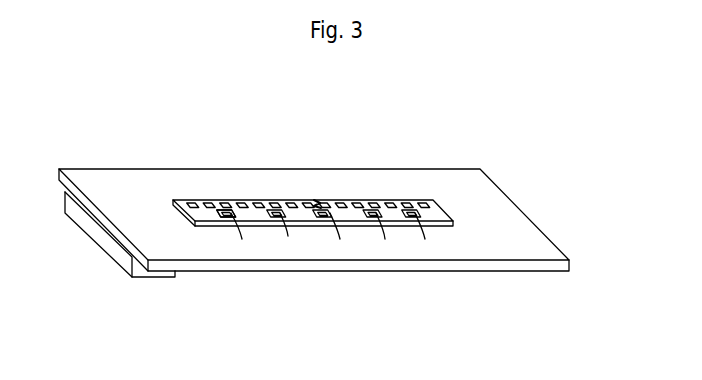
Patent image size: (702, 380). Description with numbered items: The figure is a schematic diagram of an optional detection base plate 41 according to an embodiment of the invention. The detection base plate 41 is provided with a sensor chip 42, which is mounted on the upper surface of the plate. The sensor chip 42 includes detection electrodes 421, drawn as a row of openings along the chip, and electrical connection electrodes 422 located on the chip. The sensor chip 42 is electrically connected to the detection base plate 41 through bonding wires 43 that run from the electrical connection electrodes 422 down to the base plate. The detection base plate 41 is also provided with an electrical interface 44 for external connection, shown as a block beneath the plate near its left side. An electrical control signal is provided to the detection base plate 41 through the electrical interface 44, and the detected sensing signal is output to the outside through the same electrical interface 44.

The detection base plate 41 is at (478, 250).
The sensor chip 42 is at (340, 213).
The bonding wires 43 is at (287, 229).
The electrical interface 44 is at (90, 223).
The detection electrodes 421 is at (341, 206).
The electrical connection electrodes 422 is at (220, 211).